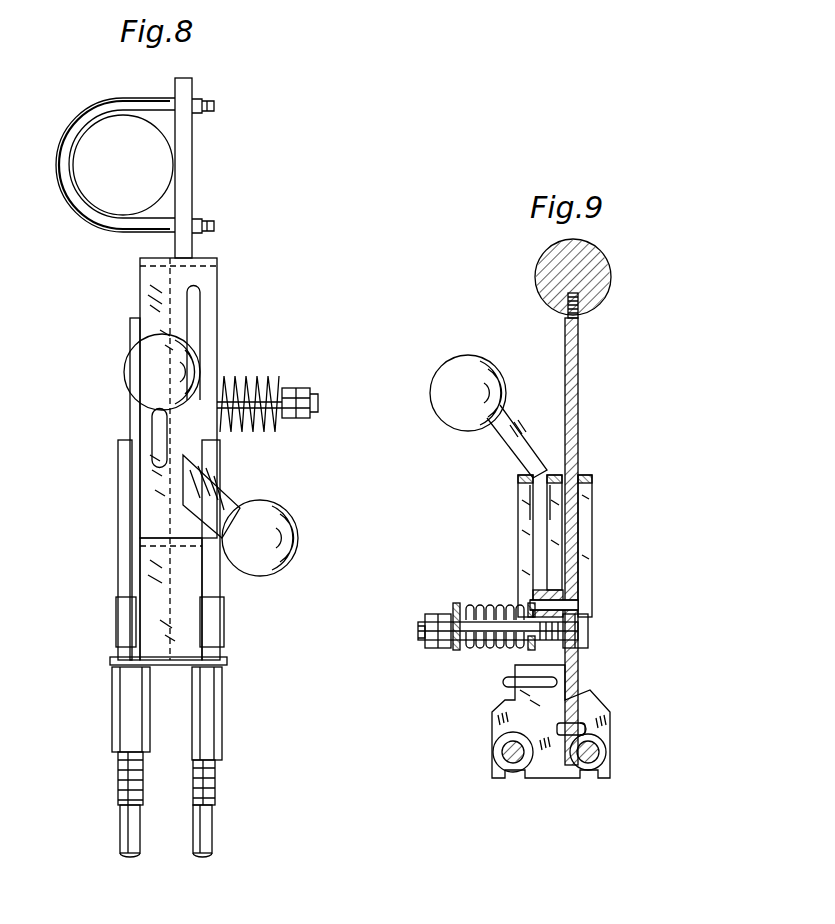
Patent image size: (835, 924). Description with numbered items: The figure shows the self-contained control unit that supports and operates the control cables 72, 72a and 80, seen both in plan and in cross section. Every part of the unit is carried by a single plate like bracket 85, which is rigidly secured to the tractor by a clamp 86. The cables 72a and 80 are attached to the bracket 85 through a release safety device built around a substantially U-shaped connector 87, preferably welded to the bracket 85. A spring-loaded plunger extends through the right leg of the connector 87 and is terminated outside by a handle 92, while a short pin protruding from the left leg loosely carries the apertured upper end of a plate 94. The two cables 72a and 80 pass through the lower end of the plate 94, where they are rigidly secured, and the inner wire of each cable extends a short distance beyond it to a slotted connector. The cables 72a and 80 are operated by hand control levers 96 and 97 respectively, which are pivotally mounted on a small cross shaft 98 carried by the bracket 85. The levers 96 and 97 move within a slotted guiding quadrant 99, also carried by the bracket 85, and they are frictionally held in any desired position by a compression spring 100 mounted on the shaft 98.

In FIG. 8, the control cable 72 is at (212, 820).
In FIG. 9, the control cable 72 is at (515, 772).
In FIG. 8, the control cable 72a is at (215, 776).
In FIG. 8, the control cable 80 is at (118, 785).
In FIG. 9, the control cable 80 is at (588, 770).
In FIG. 8, the plate like bracket 85 is at (185, 188).
In FIG. 9, the plate like bracket 85 is at (580, 592).
In FIG. 8, the clamp 86 is at (92, 114).
In FIG. 8, the U-shaped connector 87 is at (152, 622).
In FIG. 9, the handle 92 is at (510, 684).
In FIG. 8, the plate 94 is at (227, 661).
In FIG. 9, the plate 94 is at (545, 765).
In FIG. 8, the hand control lever 96 is at (296, 528).
In FIG. 9, the hand control lever 96 is at (500, 455).
In FIG. 8, the hand control lever 97 is at (138, 368).
In FIG. 9, the hand control lever 97 is at (580, 362).
In FIG. 8, the cross shaft 98 is at (262, 380).
In FIG. 9, the cross shaft 98 is at (488, 630).
In FIG. 8, the slotted guiding quadrant 99 is at (205, 280).
In FIG. 9, the slotted guiding quadrant 99 is at (592, 490).
In FIG. 8, the compression spring 100 is at (265, 428).
In FIG. 9, the compression spring 100 is at (480, 660).